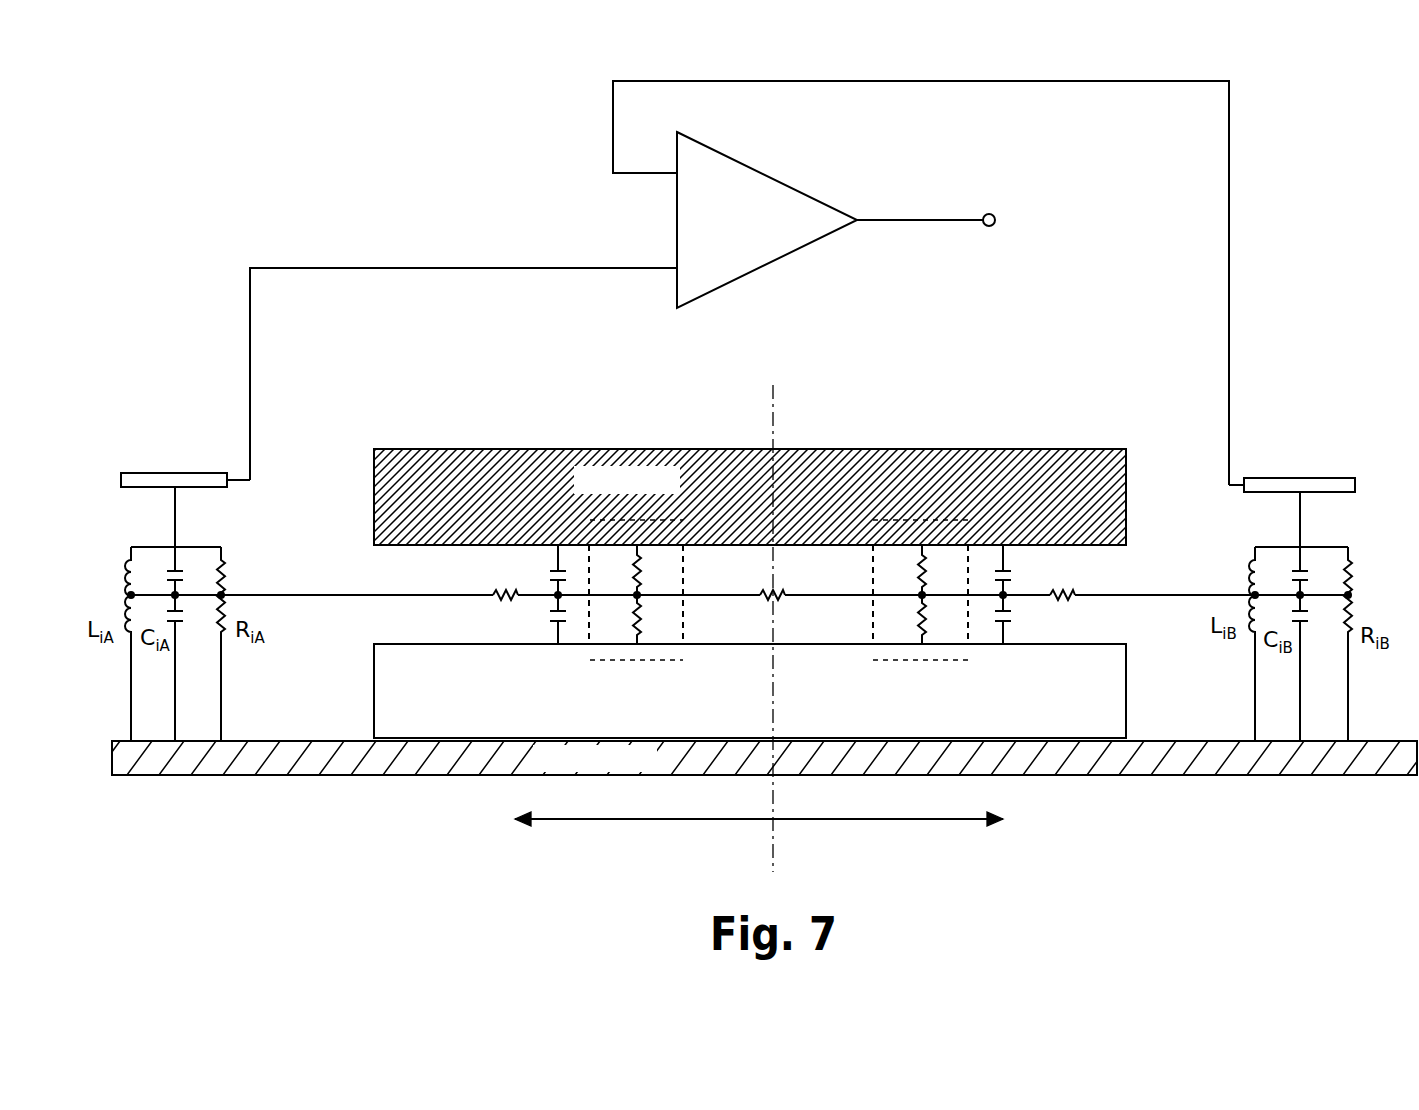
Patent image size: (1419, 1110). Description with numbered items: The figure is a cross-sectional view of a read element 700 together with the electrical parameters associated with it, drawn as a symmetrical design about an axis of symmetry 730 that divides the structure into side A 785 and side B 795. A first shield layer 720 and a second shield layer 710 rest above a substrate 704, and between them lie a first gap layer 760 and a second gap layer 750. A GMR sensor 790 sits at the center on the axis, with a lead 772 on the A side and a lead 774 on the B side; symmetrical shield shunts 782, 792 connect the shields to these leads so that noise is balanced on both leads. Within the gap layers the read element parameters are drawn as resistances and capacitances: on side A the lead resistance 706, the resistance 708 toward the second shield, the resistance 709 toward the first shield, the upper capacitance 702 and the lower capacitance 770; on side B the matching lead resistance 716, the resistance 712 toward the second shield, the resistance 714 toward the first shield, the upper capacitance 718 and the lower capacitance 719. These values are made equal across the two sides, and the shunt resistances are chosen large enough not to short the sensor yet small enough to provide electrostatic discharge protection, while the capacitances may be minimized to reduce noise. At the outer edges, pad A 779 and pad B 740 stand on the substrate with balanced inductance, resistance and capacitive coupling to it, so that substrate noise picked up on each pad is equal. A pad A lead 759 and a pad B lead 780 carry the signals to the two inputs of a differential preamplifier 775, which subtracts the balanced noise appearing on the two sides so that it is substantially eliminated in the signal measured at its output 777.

The read element 700 is at (305, 210).
The capacitance C2A 702 is at (540, 556).
The substrate 704 is at (300, 773).
The resistance RXA 706 is at (497, 585).
The resistance R2A 708 is at (668, 548).
The resistance R1A 709 is at (686, 616).
The second shield layer 710 is at (1126, 499).
The resistance R2B 712 is at (918, 540).
The resistance R1B 714 is at (878, 612).
The resistance RXB 716 is at (1055, 583).
The capacitance C2B 718 is at (1036, 553).
The capacitance C1B 719 is at (1030, 647).
The first shield layer 720 is at (1094, 713).
The axis of symmetry 730 is at (773, 800).
The pad B 740 is at (1337, 477).
The second gap layer 750 is at (385, 566).
The pad A lead 759 is at (275, 268).
The first gap layer 760 is at (385, 612).
The capacitance C1A 770 is at (528, 648).
The lead 772 is at (742, 545).
The lead 774 is at (826, 586).
The differential preamplifier 775 is at (770, 176).
The output 777 is at (992, 214).
The pad A 779 is at (142, 470).
The pad B lead 780 is at (1230, 292).
The shield shunt 782 is at (596, 540).
The side A 785 is at (642, 865).
The GMR sensor 790 is at (780, 548).
The shield shunt 792 is at (963, 545).
The side B 795 is at (867, 865).